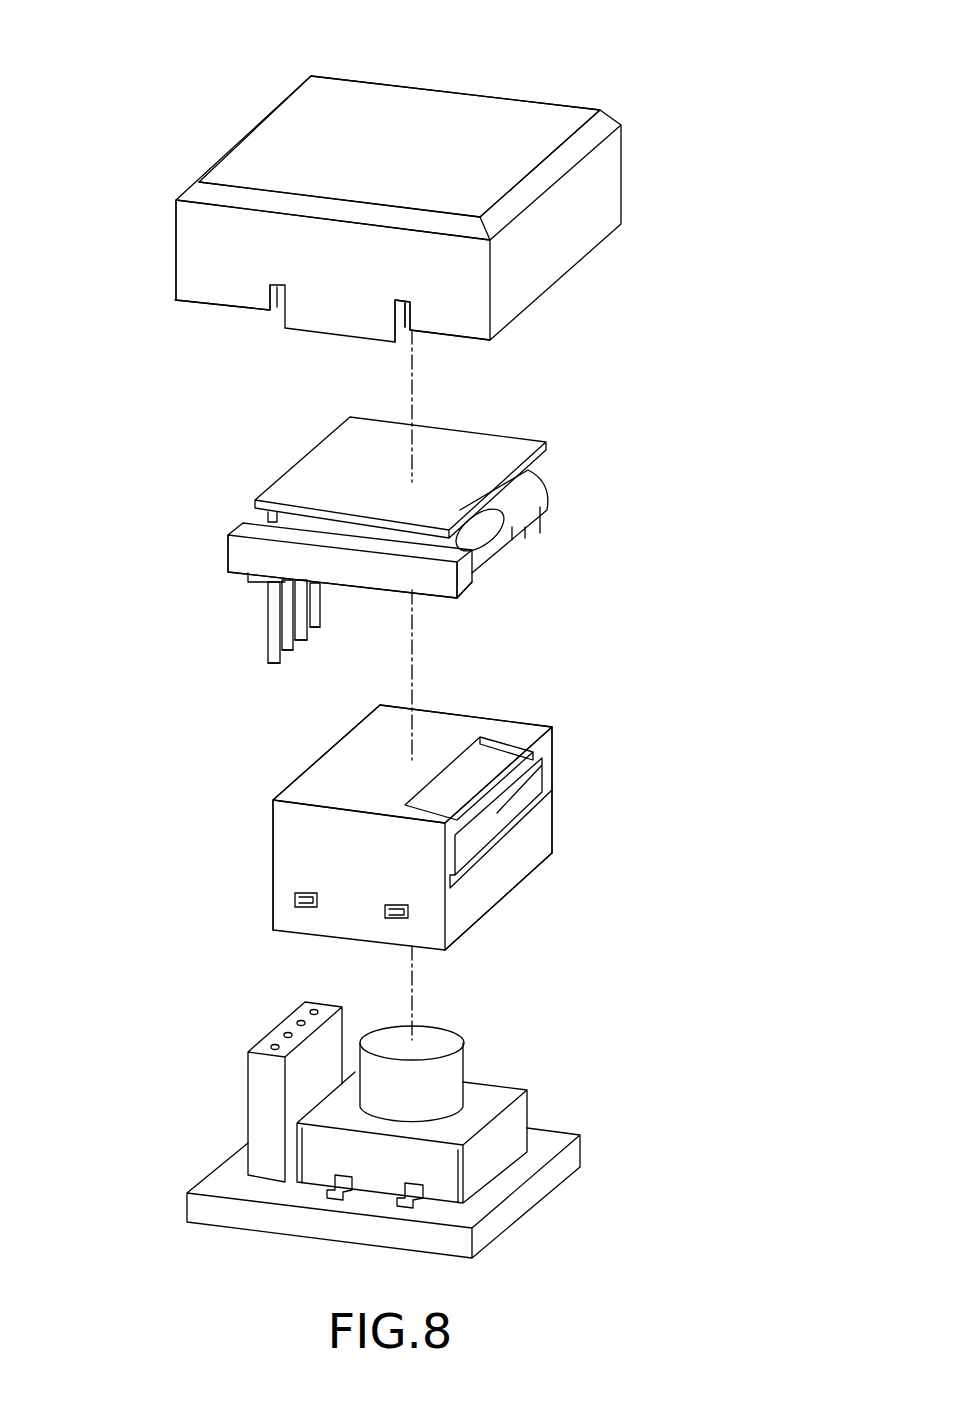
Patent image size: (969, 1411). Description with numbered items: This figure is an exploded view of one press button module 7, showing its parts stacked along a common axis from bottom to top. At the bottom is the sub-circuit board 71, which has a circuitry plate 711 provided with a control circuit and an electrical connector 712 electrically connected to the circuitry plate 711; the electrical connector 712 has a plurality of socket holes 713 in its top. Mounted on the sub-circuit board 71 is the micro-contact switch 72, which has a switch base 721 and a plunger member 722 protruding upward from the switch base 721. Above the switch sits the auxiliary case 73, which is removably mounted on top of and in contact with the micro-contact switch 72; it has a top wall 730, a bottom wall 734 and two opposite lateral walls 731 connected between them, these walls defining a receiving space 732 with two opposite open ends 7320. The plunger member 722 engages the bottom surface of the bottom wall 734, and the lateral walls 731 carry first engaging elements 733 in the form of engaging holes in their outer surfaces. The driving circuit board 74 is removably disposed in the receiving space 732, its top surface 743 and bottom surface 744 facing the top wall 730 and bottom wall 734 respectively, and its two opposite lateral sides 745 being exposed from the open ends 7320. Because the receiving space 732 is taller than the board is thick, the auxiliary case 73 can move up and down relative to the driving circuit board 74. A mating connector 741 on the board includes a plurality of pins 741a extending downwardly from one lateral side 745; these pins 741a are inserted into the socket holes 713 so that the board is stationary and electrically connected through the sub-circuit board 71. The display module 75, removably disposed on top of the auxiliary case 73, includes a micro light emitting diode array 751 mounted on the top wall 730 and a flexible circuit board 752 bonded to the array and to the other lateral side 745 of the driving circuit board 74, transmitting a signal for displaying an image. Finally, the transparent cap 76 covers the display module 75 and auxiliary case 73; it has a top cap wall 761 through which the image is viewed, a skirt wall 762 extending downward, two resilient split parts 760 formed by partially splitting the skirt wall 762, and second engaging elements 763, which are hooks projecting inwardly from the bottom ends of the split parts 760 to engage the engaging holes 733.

The press button module 7 is at (637, 92).
The transparent cap 76 is at (75, 197).
The top cap wall 761 is at (265, 147).
The skirt wall 762 is at (187, 225).
The resilient split parts 760 is at (218, 278).
The second engaging elements 763 is at (405, 332).
The display module 75 is at (472, 488).
The micro light emitting diode array 751 is at (503, 453).
The flexible circuit board 752 is at (518, 490).
The driving circuit board 74 is at (233, 525).
The top surface 743 is at (257, 518).
The lateral sides 745 is at (228, 545).
The mating connector 741 is at (255, 582).
The pins 741a is at (332, 628).
The bottom surface 744 is at (377, 590).
The auxiliary case 73 is at (652, 763).
The top wall 730 is at (510, 730).
The open ends 7320 is at (552, 765).
The lateral walls 731 is at (288, 824).
The receiving space 732 is at (522, 818).
The first engaging elements 733 is at (407, 913).
The bottom wall 734 is at (455, 930).
The sub-circuit board 71 is at (88, 1042).
The circuitry plate 711 is at (200, 1208).
The electrical connector 712 is at (265, 1088).
The socket holes 713 is at (270, 1032).
The micro-contact switch 72 is at (660, 1070).
The switch base 721 is at (503, 1158).
The plunger member 722 is at (463, 1058).